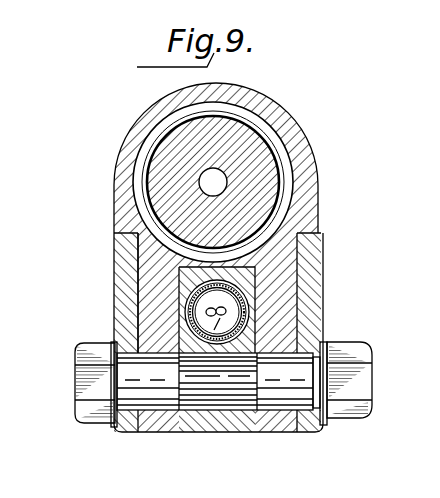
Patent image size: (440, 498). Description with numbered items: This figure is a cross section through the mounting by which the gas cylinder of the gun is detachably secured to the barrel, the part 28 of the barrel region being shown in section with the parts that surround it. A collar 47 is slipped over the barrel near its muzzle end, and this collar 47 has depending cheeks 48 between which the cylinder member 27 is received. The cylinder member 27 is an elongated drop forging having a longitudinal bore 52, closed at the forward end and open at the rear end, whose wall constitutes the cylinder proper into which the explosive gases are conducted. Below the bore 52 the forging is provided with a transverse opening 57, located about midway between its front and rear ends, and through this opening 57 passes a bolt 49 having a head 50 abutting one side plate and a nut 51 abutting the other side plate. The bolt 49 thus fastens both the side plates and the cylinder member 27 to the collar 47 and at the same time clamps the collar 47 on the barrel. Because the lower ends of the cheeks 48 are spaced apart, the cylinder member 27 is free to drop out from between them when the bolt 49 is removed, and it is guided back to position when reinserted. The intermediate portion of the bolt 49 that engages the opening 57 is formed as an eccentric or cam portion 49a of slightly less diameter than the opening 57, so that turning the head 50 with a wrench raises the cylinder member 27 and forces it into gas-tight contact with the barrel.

The collar 47 is at (303, 133).
The body 28 is at (270, 270).
The depending cheeks 48 is at (150, 293).
The longitudinal bore 52 is at (157, 308).
The cylinder member 27 is at (250, 310).
The bolt 49 is at (140, 393).
The eccentric or cam portion 49a is at (232, 402).
The transverse opening 57 is at (222, 380).
The bolt head 50 is at (95, 343).
The nut 51 is at (372, 346).